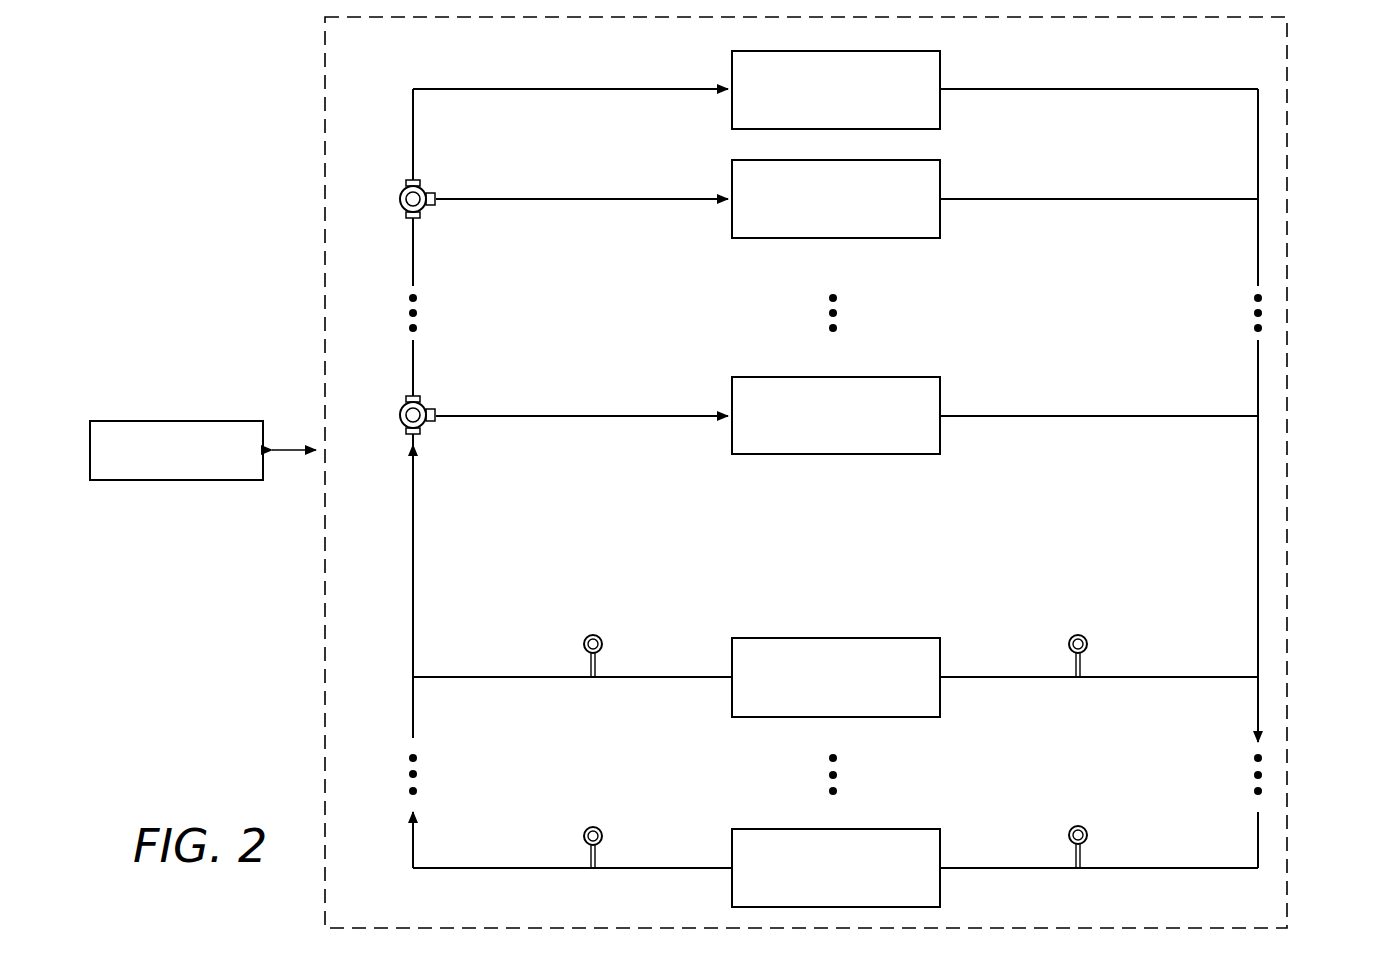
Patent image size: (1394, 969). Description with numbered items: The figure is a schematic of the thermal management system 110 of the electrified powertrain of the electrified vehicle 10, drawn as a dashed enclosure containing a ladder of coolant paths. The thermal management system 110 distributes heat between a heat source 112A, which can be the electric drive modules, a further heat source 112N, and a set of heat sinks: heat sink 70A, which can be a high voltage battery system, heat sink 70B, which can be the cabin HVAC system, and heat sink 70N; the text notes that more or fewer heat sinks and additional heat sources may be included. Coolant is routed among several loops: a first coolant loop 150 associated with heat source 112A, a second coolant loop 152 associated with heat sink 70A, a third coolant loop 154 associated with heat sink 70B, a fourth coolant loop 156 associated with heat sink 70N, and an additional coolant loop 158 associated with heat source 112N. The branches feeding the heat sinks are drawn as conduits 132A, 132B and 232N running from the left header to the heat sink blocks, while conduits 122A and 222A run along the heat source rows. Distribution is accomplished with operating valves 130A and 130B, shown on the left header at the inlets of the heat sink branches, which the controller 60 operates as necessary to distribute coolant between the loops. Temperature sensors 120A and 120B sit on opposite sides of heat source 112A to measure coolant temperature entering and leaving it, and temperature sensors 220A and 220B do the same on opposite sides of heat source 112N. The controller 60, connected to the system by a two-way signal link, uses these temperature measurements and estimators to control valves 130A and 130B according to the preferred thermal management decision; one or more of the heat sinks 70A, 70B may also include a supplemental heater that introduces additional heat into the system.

The electrified vehicle 10 is at (255, 153).
The controller 60 is at (188, 421).
The thermal management system 110 is at (1290, 212).
The second coolant loop 152 is at (474, 72).
The first coolant loop 150 is at (425, 538).
The third coolant loop 154 is at (480, 216).
The fourth coolant loop 156 is at (528, 398).
The additional coolant loop 158 is at (538, 852).
The valve 130A is at (425, 405).
The valve 130B is at (425, 190).
The heat sink conduit 132A is at (580, 89).
The heat sink conduit 132B is at (532, 199).
The heat sink conduit 232N is at (540, 416).
The heat sink 70A is at (940, 113).
The heat sink 70B is at (940, 224).
The heat sink 70N is at (940, 395).
The heat source 112A is at (865, 638).
The heat source 112N is at (925, 829).
The temperature sensor 120A is at (602, 640).
The temperature sensor 120B is at (1087, 640).
The temperature sensor 220A is at (602, 830).
The temperature sensor 220B is at (1087, 830).
The heat source conduit 122A is at (490, 677).
The heat source conduit 222A is at (472, 868).